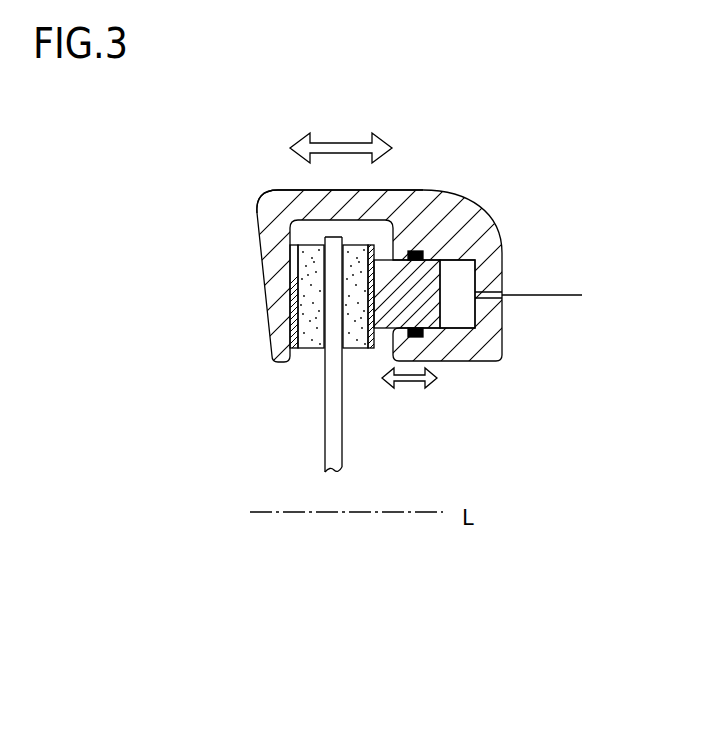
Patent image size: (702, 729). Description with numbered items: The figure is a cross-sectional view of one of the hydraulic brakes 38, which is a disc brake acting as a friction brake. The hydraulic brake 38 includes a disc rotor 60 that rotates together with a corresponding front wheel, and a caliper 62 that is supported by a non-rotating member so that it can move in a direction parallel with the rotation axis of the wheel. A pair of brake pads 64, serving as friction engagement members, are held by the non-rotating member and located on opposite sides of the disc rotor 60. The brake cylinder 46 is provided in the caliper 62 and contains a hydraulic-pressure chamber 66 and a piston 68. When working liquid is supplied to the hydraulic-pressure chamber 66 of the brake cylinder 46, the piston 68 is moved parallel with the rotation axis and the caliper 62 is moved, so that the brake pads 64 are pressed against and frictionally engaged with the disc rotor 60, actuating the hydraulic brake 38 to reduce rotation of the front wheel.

The hydraulic brake 38 is at (483, 126).
The brake cylinder 46 is at (441, 226).
The disc rotor 60 is at (334, 464).
The caliper 62 is at (277, 188).
The brake pads 64 is at (308, 355).
The hydraulic-pressure chamber 66 is at (458, 280).
The piston 68 is at (394, 278).